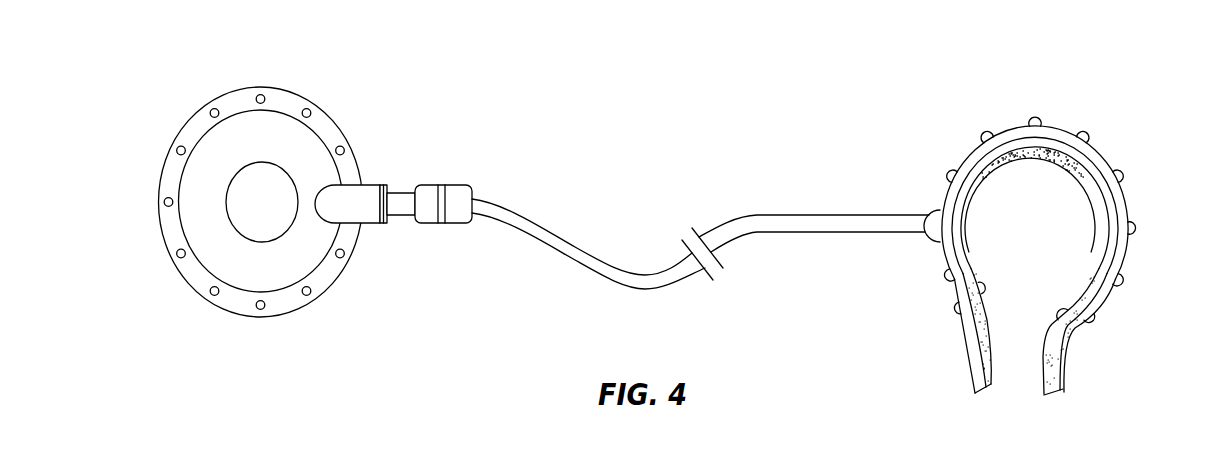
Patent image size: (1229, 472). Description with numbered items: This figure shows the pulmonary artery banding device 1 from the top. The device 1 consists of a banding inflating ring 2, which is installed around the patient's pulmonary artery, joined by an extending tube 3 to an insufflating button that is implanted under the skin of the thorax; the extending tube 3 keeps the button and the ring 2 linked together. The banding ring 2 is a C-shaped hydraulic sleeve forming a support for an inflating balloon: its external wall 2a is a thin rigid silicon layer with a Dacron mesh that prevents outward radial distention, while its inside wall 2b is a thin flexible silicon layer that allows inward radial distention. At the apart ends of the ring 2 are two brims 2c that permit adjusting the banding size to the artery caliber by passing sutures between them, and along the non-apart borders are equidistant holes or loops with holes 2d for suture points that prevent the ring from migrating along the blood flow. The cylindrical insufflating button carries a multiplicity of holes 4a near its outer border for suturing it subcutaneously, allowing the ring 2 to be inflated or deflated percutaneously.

The pulmonary artery banding device 1 is at (668, 217).
The banding inflating ring 2 is at (1047, 231).
The external wall 2a is at (1105, 147).
The inside wall 2b is at (1023, 141).
The brims 2c is at (974, 375).
The holes or loops with holes 2d is at (944, 274).
The extending tube 3 is at (565, 242).
The holes 4a is at (346, 146).